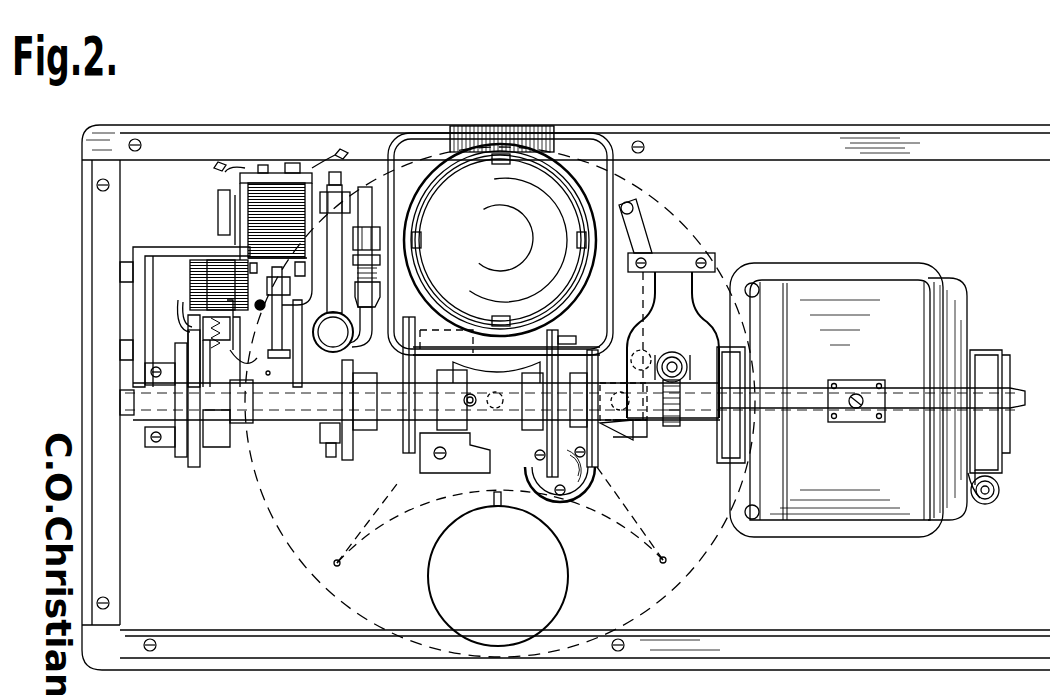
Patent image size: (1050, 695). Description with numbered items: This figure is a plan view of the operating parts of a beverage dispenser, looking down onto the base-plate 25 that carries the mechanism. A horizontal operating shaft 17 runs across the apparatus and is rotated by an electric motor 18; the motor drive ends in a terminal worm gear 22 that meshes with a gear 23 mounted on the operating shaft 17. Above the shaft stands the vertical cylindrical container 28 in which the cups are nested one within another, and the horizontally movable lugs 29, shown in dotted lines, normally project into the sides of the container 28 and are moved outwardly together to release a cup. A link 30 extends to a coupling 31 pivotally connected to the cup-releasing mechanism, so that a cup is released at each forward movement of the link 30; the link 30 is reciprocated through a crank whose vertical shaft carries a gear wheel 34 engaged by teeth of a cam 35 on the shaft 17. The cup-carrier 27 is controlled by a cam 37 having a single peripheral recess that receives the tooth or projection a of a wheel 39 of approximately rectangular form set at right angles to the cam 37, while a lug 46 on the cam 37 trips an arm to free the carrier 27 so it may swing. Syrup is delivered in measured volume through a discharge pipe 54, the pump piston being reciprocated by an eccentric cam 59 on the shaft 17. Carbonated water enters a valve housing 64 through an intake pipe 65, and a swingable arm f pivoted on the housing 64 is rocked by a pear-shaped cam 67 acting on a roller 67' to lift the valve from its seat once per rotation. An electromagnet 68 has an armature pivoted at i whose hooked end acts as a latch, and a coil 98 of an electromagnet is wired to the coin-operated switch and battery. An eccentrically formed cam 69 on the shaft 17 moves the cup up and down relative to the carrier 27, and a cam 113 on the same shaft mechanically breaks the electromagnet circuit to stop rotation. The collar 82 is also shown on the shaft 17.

The operating shaft 17 is at (1021, 389).
The electric motor 18 is at (855, 515).
The terminal worm gear 22 is at (680, 357).
The gear 23 is at (674, 426).
The base-plate 25 is at (912, 170).
The cup-carrier 27 is at (688, 576).
The cylindrical container or cup-holder 28 is at (553, 185).
The horizontally movable lugs 29 is at (424, 236).
The link 30 is at (636, 228).
The coupling 31 is at (638, 206).
The gear wheel 34 is at (636, 432).
The cam 35 is at (596, 425).
The cam 37 is at (547, 460).
The wheel 39 is at (490, 430).
The lug 46 is at (568, 342).
The discharge pipe 54 is at (376, 202).
The eccentric cam 59 is at (409, 458).
The valve housing 64 is at (352, 341).
The intake pipe 65 is at (344, 180).
The cam 67 is at (336, 429).
The roller 67' is at (370, 422).
The electromagnet 68 is at (257, 182).
The eccentrically formed cam 69 is at (198, 462).
The collar 82 is at (227, 406).
The coil of electromagnet 98 is at (192, 286).
The cam 113 is at (182, 452).
The tooth or projection a is at (468, 447).
The swingable arm f is at (300, 368).
The pivot of armature i is at (275, 360).